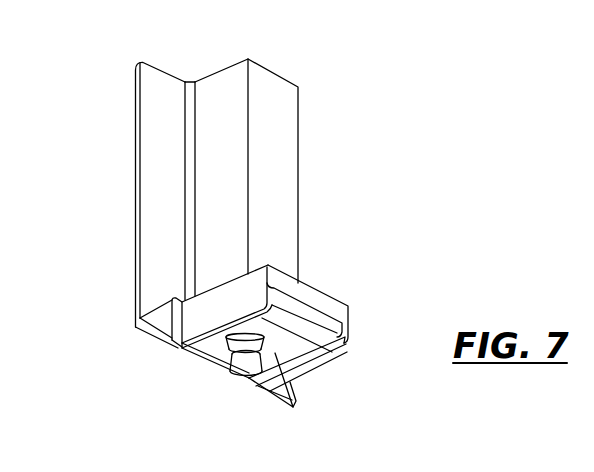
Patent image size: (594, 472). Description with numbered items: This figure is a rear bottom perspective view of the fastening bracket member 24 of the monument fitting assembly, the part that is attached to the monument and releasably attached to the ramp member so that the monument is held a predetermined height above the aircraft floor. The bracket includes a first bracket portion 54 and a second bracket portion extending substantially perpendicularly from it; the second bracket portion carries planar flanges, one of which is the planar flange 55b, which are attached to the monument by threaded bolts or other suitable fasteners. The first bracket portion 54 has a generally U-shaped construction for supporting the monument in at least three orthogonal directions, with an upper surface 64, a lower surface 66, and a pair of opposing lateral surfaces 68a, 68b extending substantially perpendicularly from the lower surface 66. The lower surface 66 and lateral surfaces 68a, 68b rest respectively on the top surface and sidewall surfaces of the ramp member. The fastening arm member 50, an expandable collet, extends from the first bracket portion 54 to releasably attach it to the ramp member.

The fastening bracket member 24 is at (273, 238).
The fastening arm member 50 is at (240, 377).
The first bracket portion 54 is at (312, 283).
The planar flange 55b is at (136, 194).
The upper surface 64 is at (304, 283).
The lower surface 66 is at (296, 382).
The lateral surface 68a is at (316, 352).
The lateral surface 68b is at (216, 340).